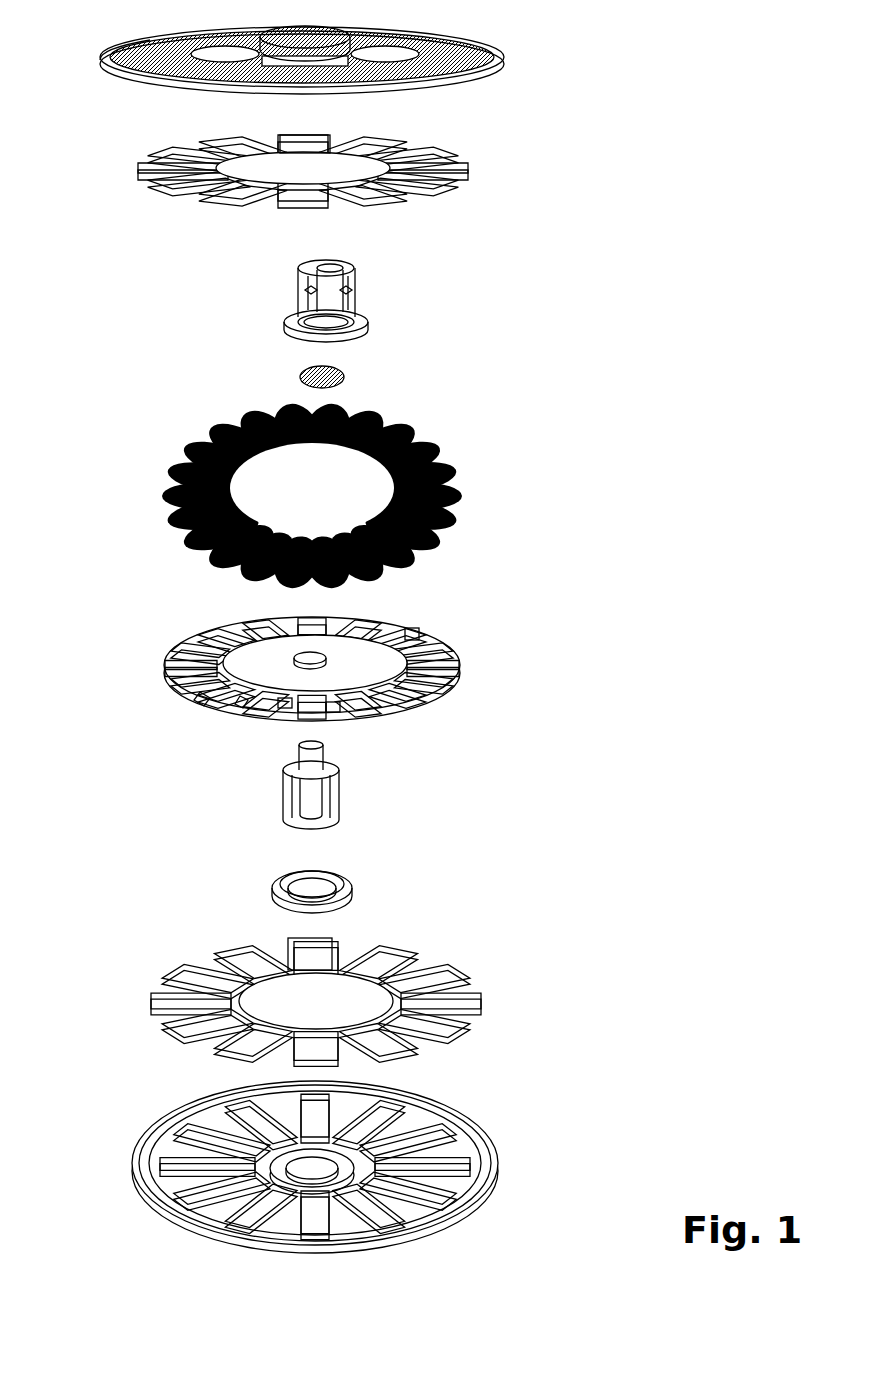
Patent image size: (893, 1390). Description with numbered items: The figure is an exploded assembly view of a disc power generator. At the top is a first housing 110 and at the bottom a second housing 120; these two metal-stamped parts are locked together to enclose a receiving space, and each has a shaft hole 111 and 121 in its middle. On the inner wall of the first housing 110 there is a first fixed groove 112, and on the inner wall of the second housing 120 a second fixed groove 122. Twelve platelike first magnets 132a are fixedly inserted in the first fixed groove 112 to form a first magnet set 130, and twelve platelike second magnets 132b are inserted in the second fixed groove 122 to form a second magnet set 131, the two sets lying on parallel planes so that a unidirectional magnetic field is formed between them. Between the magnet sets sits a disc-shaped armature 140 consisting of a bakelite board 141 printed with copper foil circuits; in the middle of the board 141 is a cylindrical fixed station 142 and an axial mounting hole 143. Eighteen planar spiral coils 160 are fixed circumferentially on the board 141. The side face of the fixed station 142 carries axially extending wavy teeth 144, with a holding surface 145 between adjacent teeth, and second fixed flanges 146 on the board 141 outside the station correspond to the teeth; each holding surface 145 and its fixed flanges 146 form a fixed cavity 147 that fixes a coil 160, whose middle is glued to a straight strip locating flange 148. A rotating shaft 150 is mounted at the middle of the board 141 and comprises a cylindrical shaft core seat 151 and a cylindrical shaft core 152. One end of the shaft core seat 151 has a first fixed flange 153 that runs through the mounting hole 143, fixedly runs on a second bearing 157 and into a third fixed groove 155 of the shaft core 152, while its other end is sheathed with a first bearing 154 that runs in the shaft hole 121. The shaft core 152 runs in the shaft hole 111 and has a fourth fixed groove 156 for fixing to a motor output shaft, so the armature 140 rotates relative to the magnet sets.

The first housing 110 is at (295, 60).
The shaft hole 111 is at (455, 42).
The first fixed groove 112 is at (125, 46).
The second housing 120 is at (314, 1164).
The shaft hole 121 is at (333, 1170).
The second fixed groove 122 is at (417, 1137).
The first magnet set 130 is at (360, 171).
The second magnet set 131 is at (367, 998).
The first magnet 132a is at (463, 167).
The second magnet 132b is at (437, 975).
The armature 140 is at (380, 584).
The board 141 is at (346, 682).
The fixed station 142 is at (363, 660).
The mounting hole 143 is at (300, 653).
The wavy teeth 144 is at (285, 702).
The holding surface 145 is at (243, 694).
The second fixed flange 146 is at (413, 633).
The fixed cavity 147 is at (333, 710).
The locating flange 148 is at (210, 700).
The rotating shaft 150 is at (388, 586).
The shaft core seat 151 is at (337, 792).
The shaft core 152 is at (352, 305).
The first fixed flange 153 is at (288, 767).
The first bearing 154 is at (343, 887).
The third fixed groove 155 is at (362, 328).
The fourth fixed groove 156 is at (317, 268).
The second bearing 157 is at (303, 375).
The coil 160 is at (450, 463).